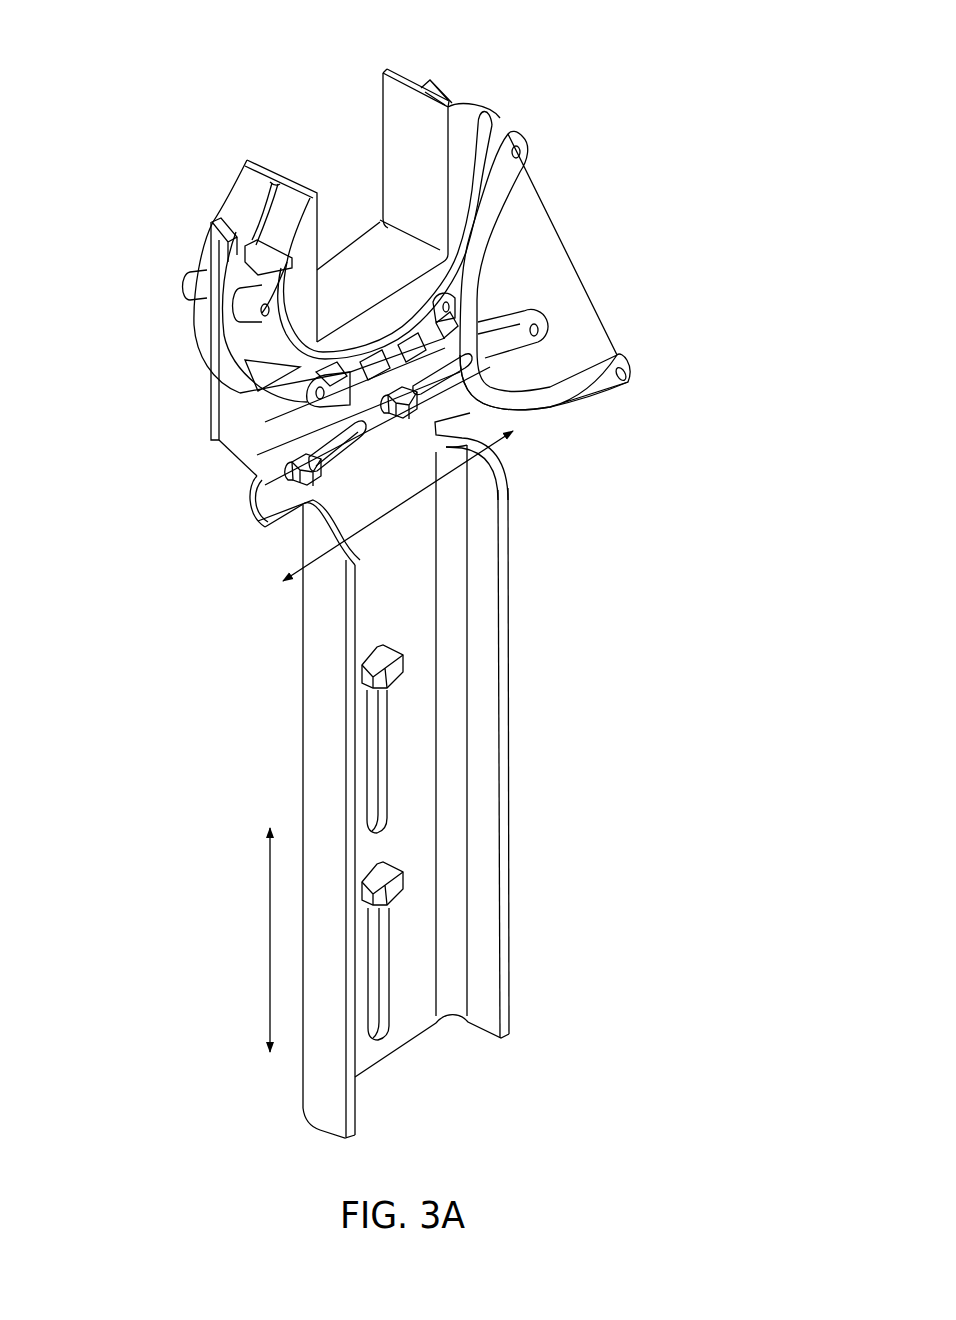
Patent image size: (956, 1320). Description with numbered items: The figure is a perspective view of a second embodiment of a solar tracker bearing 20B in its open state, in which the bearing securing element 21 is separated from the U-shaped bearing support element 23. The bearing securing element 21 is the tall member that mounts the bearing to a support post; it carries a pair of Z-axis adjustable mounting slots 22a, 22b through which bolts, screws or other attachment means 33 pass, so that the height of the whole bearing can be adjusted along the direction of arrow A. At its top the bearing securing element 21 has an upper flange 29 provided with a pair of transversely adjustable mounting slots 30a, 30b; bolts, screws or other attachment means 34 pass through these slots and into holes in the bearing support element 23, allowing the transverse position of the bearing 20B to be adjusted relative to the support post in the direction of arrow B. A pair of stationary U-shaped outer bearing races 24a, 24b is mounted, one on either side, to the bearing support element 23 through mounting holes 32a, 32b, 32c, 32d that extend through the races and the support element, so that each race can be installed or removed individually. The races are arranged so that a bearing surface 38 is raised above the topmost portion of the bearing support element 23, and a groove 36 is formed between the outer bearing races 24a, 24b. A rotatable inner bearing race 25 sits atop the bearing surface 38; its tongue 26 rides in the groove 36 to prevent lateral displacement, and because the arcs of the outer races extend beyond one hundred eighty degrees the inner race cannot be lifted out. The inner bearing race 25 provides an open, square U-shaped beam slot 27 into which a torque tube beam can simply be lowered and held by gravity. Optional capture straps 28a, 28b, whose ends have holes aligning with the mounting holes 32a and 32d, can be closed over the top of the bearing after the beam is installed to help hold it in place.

The solar tracker bearing 20B is at (574, 60).
The bearing securing element 21 is at (292, 678).
The Z-axis adjustable mounting slot 22a is at (378, 721).
The Z-axis adjustable mounting slot 22b is at (378, 941).
The U-shaped bearing support element 23 is at (212, 380).
The outer bearing race 24a is at (204, 304).
The outer bearing race 24b is at (222, 332).
The inner bearing race 25 is at (396, 76).
The tongue 26 is at (274, 182).
The beam slot 27 is at (366, 268).
The capture strap 28a is at (532, 312).
The capture strap 28b is at (611, 352).
The upper flange 29 is at (250, 500).
The transversely adjustable mounting slot 30a is at (330, 455).
The transversely adjustable mounting slot 30b is at (432, 386).
The mounting hole 32a is at (262, 316).
The mounting hole 32b is at (316, 402).
The mounting hole 32c is at (453, 313).
The mounting hole 32d is at (506, 143).
The attachment means 33 is at (392, 662).
The attachment means 34 is at (306, 480).
The groove 36 is at (268, 276).
The bearing surface 38 is at (415, 318).
The arrow A is at (268, 912).
The arrow B is at (405, 508).